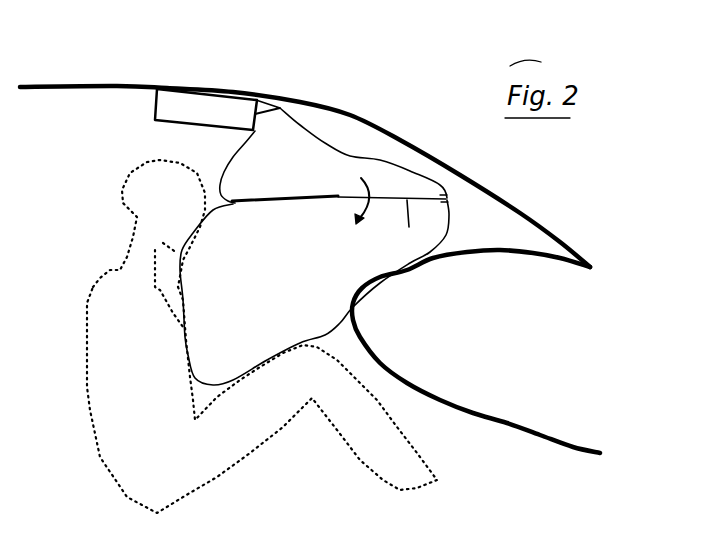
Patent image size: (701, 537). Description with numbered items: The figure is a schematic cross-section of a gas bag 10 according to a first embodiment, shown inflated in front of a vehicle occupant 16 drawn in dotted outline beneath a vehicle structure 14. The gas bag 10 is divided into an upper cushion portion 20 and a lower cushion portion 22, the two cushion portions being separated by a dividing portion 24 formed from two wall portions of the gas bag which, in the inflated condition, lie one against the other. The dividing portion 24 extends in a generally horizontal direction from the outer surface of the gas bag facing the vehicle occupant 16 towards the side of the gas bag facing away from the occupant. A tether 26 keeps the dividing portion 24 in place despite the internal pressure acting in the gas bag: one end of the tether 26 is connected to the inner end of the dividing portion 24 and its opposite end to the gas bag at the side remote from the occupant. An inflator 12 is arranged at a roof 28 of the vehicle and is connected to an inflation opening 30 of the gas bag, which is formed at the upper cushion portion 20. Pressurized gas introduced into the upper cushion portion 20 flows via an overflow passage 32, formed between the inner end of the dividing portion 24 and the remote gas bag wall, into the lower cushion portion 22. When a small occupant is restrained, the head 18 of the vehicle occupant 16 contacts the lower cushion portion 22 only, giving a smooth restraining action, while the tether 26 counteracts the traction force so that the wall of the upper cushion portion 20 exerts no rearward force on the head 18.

The gas bag 10 is at (318, 242).
The inflator 12 is at (215, 105).
The instrument panel 14 is at (535, 253).
The vehicle occupant 16 is at (241, 336).
The head 18 is at (126, 186).
The upper cushion portion 20 is at (293, 178).
The lower cushion portion 22 is at (250, 340).
The dividing portion 24 is at (280, 208).
The tether 26 is at (405, 230).
The roof 28 is at (85, 76).
The inflation opening 30 is at (300, 103).
The overflow passage 32 is at (352, 217).